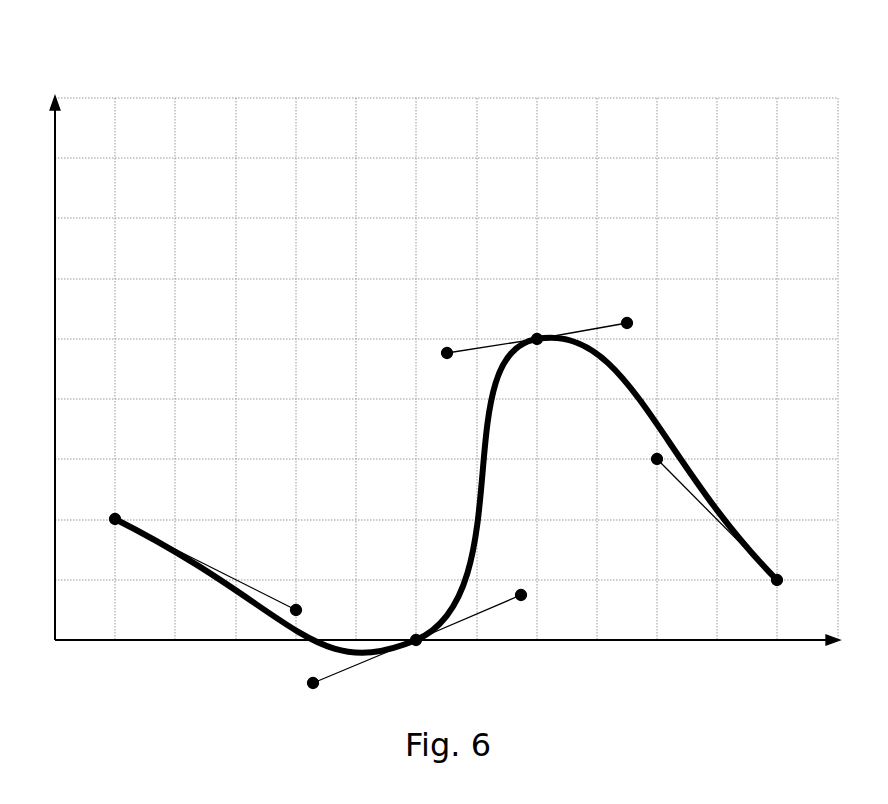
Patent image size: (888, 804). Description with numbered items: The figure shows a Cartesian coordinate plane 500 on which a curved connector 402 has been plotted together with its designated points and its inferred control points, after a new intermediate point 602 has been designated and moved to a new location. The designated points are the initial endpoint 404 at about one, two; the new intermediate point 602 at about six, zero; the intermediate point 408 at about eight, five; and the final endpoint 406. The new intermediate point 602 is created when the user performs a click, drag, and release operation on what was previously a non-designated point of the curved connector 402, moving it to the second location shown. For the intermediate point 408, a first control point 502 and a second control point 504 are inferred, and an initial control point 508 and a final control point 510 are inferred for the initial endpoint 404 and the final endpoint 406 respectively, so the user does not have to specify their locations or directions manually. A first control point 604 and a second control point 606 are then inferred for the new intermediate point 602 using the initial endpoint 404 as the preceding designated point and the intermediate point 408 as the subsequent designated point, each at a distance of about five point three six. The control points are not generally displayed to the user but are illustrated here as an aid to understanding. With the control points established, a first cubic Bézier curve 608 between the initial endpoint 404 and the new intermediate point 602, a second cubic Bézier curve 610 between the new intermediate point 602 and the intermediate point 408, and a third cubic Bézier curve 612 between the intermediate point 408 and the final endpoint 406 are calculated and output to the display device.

The Cartesian coordinate plane 500 is at (600, 51).
The curved connector 402 is at (446, 470).
The initial endpoint 404 is at (114, 524).
The final endpoint 406 is at (775, 585).
The intermediate point 408 is at (537, 345).
The first control point 502 is at (446, 347).
The second control point 504 is at (628, 318).
The initial control point 508 is at (295, 605).
The final control point 510 is at (655, 464).
The new intermediate point 602 is at (415, 637).
The first control point 604 is at (313, 688).
The second control point 606 is at (524, 598).
The first cubic Bézier curve 608 is at (248, 598).
The second cubic Bézier curve 610 is at (478, 497).
The third cubic Bézier curve 612 is at (650, 402).